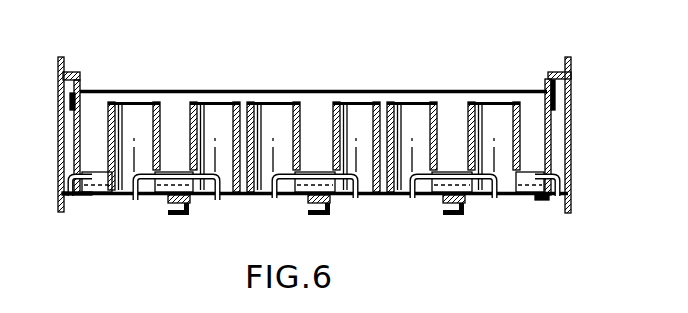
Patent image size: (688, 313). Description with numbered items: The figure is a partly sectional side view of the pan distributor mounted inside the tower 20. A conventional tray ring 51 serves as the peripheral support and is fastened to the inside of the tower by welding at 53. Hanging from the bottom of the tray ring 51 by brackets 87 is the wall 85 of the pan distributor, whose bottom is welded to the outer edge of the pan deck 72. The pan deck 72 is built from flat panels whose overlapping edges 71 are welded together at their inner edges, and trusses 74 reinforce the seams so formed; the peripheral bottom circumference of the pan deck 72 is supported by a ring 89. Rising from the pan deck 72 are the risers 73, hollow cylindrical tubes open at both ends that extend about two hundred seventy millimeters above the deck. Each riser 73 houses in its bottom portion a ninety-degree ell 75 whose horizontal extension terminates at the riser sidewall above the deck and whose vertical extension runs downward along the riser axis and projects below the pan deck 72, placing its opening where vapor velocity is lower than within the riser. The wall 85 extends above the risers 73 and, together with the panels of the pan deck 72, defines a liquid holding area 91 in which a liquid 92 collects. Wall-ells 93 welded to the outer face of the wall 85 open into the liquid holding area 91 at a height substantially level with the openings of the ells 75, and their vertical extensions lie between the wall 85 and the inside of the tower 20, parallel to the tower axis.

The tower 20 is at (571, 178).
The tray ring 51 is at (550, 71).
The weld 53 is at (65, 72).
The overlapping edges 71 is at (164, 197).
The pan deck 72 is at (505, 196).
The risers 73 is at (110, 148).
The trusses 74 is at (181, 216).
The ell 75 is at (130, 197).
The wall 85 is at (550, 133).
The brackets 87 is at (82, 82).
The ring 89 is at (537, 199).
The liquid holding area 91 is at (315, 118).
The liquid 92 is at (172, 175).
The wall-ells 93 is at (58, 197).